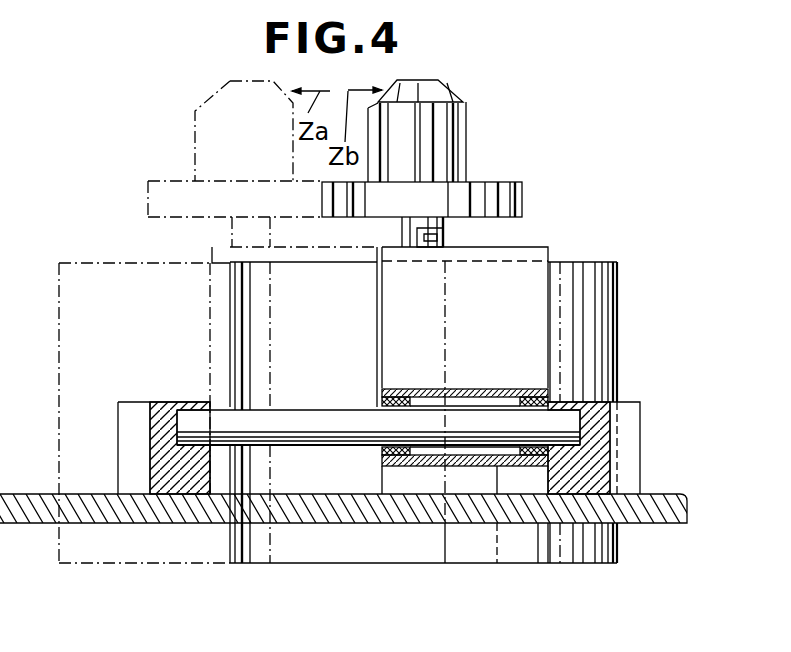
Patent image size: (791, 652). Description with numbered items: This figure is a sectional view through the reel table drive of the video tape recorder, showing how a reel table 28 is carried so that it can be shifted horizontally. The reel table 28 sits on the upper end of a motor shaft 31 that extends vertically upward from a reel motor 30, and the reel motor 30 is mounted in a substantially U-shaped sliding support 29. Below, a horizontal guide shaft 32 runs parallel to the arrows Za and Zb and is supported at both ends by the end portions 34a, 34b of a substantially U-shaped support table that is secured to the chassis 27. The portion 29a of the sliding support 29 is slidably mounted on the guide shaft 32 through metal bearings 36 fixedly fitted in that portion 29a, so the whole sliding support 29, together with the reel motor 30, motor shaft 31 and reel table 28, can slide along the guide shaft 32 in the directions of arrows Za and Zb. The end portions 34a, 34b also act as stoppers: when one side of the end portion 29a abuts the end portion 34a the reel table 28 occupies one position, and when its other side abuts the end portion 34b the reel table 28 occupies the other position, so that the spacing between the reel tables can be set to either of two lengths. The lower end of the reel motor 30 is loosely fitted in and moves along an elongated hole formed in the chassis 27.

The chassis 27 is at (673, 523).
The reel table 28 is at (207, 128).
The sliding support 29 is at (217, 267).
The portion of the sliding support 29a is at (524, 392).
The reel motor 30 is at (76, 550).
The motor shaft 31 is at (238, 231).
The guide shaft 32 is at (315, 410).
The end portion of the support table 34a is at (594, 400).
The end portion of the support table 34b is at (165, 402).
The metal bearing 36 is at (390, 466).